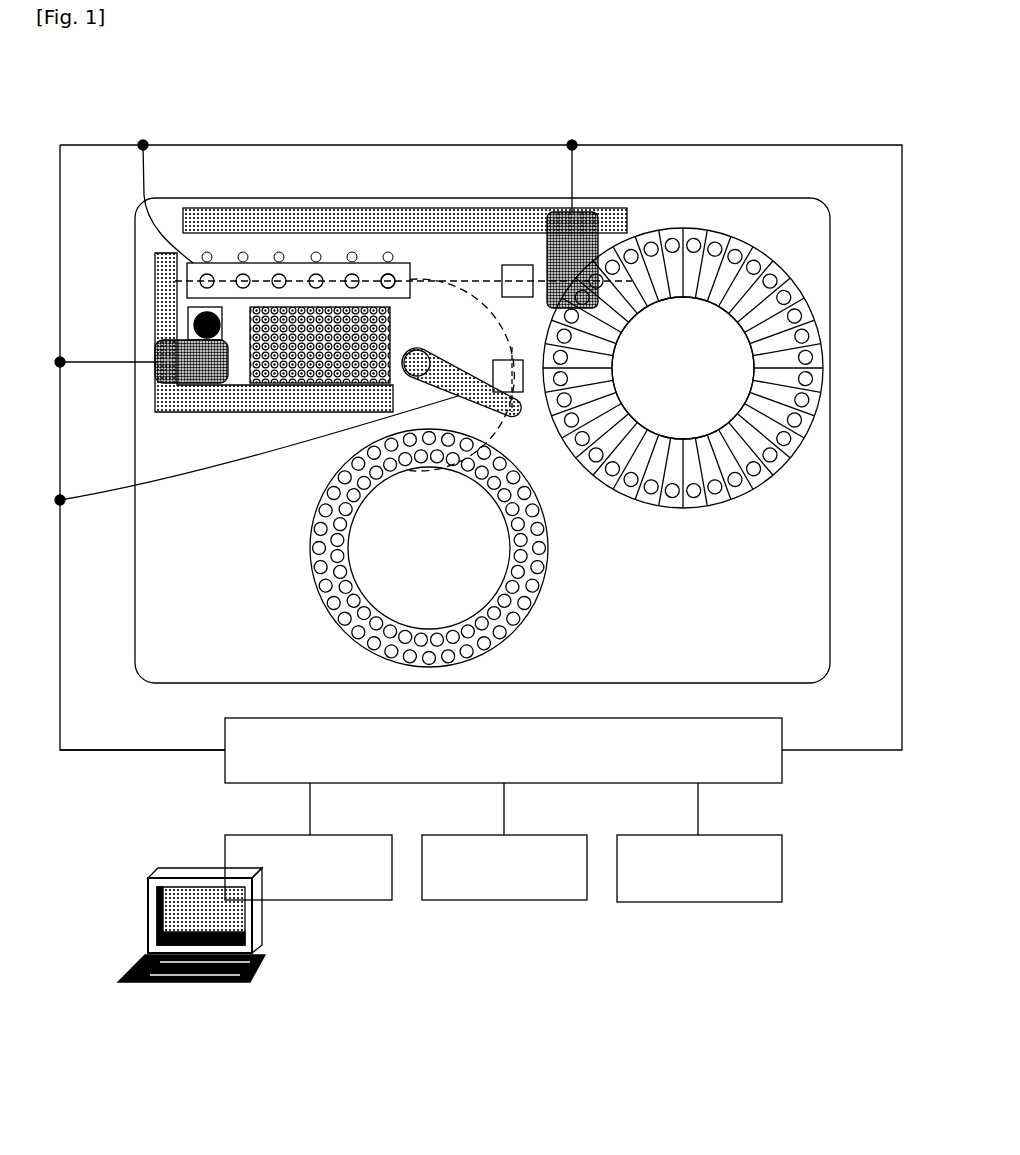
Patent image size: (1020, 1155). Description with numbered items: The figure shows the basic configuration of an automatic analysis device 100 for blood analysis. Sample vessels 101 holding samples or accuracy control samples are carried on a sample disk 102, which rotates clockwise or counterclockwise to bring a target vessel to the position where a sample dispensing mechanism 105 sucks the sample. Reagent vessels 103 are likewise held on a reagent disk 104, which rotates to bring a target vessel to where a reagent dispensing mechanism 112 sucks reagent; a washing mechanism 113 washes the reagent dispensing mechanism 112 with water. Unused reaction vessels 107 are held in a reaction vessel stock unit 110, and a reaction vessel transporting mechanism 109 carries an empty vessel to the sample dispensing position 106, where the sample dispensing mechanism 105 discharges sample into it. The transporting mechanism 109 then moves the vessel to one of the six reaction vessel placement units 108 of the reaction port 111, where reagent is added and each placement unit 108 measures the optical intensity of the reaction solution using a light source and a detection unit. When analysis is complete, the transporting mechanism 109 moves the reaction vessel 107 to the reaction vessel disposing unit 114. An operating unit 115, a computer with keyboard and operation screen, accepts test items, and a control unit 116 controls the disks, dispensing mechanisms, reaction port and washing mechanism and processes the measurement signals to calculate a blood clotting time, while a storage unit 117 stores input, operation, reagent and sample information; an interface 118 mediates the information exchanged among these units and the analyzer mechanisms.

The automatic analysis device 100 is at (702, 197).
The sample vessel 101 is at (513, 615).
The sample disk 102 is at (478, 553).
The reagent vessel 103 is at (738, 498).
The reagent disk 104 is at (692, 318).
The sample dispensing mechanism 105 is at (509, 416).
The sample dispensing position 106 is at (511, 372).
The reaction vessel 107 is at (404, 350).
The reaction vessel placement unit 108 is at (393, 276).
The reaction vessel transporting mechanism 109 is at (192, 386).
The reaction vessel stock unit 110 is at (268, 372).
The reaction port 111 is at (300, 274).
The reagent dispensing mechanism 112 is at (590, 213).
The reagent dispensing mechanism washing mechanism 113 is at (518, 270).
The reaction vessel disposing unit 114 is at (196, 322).
The operating unit 115 is at (256, 843).
The control unit 116 is at (441, 843).
The storage unit 117 is at (637, 845).
The interface 118 is at (230, 718).